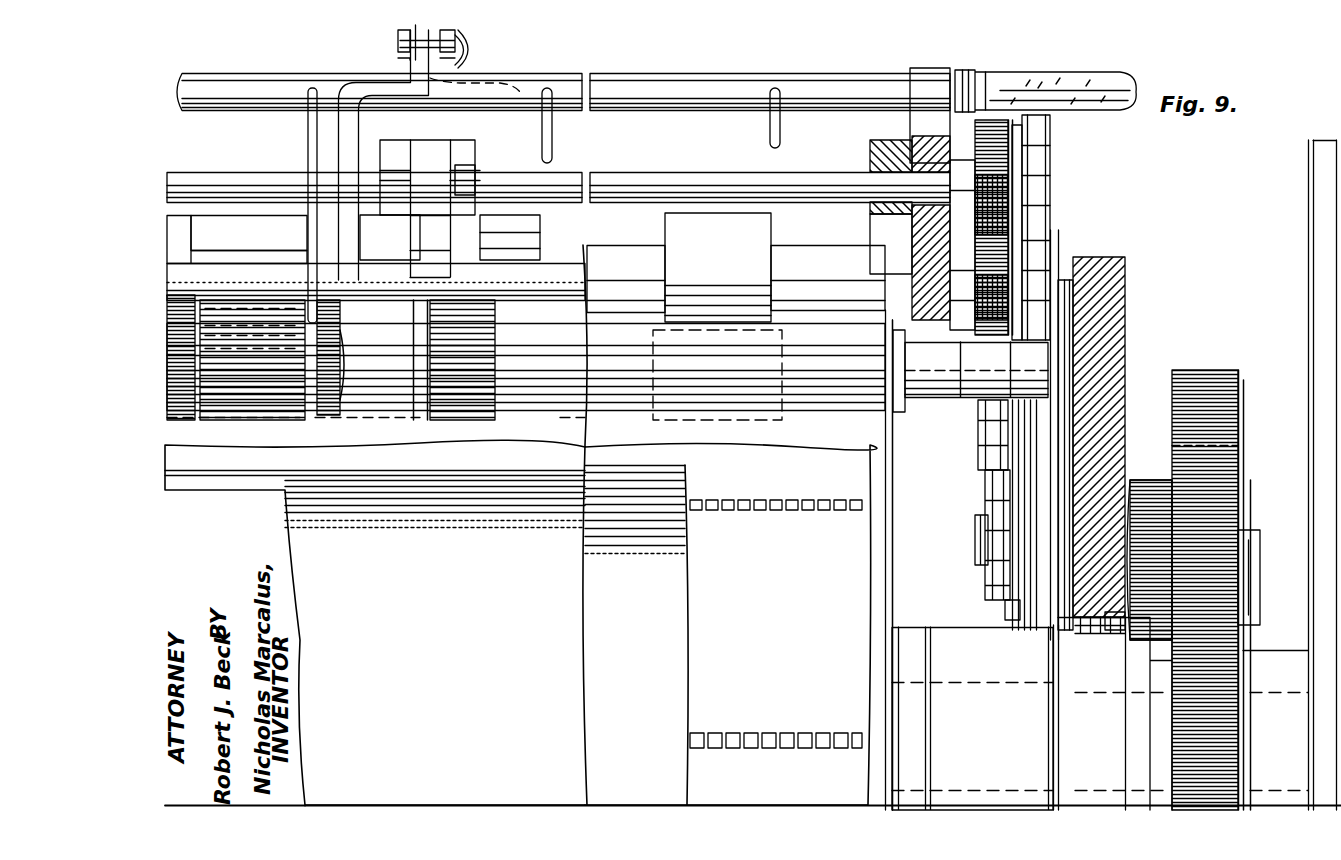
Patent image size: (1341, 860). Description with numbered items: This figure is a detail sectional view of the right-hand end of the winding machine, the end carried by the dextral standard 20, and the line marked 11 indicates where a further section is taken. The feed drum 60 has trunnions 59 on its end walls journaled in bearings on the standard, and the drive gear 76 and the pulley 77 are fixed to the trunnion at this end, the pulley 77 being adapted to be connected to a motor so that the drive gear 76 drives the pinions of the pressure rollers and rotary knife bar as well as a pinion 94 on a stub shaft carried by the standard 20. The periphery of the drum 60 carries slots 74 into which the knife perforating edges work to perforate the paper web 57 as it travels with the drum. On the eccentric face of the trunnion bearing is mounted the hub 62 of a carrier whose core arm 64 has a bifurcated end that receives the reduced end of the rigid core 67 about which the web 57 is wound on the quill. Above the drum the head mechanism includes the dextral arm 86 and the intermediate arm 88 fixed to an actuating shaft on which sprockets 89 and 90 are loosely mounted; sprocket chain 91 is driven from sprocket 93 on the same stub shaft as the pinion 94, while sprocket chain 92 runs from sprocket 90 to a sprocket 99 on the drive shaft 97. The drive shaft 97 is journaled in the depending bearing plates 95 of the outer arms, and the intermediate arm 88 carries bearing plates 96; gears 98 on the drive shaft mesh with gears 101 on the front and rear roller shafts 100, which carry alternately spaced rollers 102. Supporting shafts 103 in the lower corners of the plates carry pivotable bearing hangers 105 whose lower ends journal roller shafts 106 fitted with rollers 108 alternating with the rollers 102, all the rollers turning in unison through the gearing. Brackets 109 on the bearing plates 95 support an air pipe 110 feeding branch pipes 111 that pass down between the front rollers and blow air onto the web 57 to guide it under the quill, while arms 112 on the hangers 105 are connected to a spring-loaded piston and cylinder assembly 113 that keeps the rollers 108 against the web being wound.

The section line 11- 11 is at (310, 581).
The dextral standard 20 is at (1125, 283).
The web 57 is at (860, 437).
The trunnions 59 is at (945, 683).
The feed drum 60 is at (855, 580).
The hub 62 is at (1100, 711).
The core arm 64 is at (1010, 608).
The core 67 is at (1028, 352).
The slots 74 is at (768, 512).
The drive gear 76 is at (1222, 380).
The pulley 77 is at (1308, 250).
The dextral arm 86 is at (870, 158).
The intermediate arm 88 is at (430, 209).
The sprocket 89 is at (978, 420).
The sprocket 90 is at (1045, 308).
The sprocket chain 91 is at (985, 466).
The sprocket chain 92 is at (1010, 262).
The sprocket 93 is at (985, 540).
The pinion 94 is at (1240, 458).
The bearing plates 95 is at (912, 230).
The bearing plate 96 is at (400, 148).
The drive shaft 97 is at (660, 185).
The gear 98 is at (1018, 120).
The sprocket 99 is at (1052, 148).
The roller shafts 100 is at (252, 262).
The gears 101 is at (1012, 270).
The rollers 102 is at (282, 215).
The supporting shafts 103 is at (376, 282).
The bearing hangers 105 is at (893, 336).
The roller shafts 106 is at (262, 362).
The rollers 108 is at (331, 357).
The brackets 109 is at (932, 78).
The pipe 110 is at (214, 82).
The branch pipes 111 is at (308, 128).
The arms 112 is at (475, 150).
The piston and cylinder assembly 113 is at (462, 42).